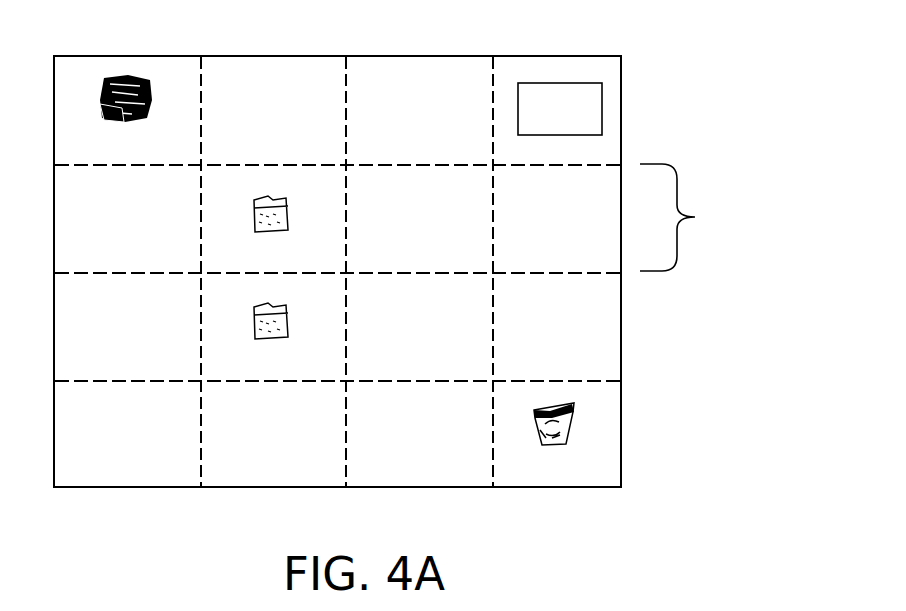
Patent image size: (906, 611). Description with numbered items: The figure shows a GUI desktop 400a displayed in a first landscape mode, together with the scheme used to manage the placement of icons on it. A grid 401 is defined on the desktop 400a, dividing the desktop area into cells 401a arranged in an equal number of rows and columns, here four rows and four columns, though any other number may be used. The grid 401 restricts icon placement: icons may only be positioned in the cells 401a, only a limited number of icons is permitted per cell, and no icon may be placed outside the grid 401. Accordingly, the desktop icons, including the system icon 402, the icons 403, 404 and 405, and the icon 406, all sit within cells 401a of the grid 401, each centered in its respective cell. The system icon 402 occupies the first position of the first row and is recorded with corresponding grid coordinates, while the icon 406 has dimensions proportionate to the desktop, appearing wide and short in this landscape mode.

The GUI desktop 400a is at (80, 53).
The grid 401 is at (347, 122).
The cells 401a is at (713, 217).
The system icon 402 is at (126, 115).
The desktop icon 403 is at (274, 230).
The desktop icon 404 is at (270, 336).
The desktop icon 405 is at (555, 440).
The icon 406 is at (560, 109).